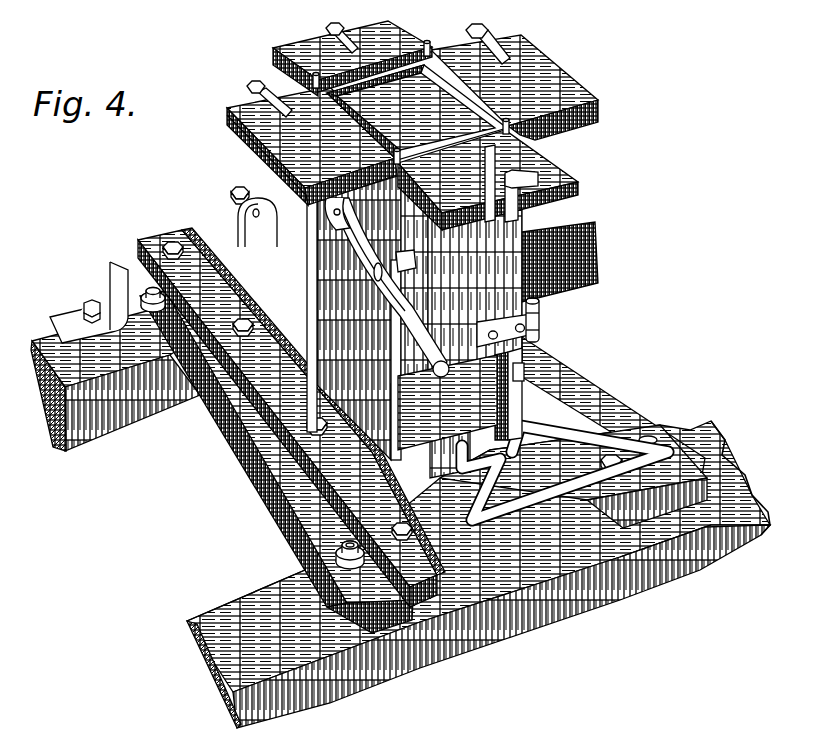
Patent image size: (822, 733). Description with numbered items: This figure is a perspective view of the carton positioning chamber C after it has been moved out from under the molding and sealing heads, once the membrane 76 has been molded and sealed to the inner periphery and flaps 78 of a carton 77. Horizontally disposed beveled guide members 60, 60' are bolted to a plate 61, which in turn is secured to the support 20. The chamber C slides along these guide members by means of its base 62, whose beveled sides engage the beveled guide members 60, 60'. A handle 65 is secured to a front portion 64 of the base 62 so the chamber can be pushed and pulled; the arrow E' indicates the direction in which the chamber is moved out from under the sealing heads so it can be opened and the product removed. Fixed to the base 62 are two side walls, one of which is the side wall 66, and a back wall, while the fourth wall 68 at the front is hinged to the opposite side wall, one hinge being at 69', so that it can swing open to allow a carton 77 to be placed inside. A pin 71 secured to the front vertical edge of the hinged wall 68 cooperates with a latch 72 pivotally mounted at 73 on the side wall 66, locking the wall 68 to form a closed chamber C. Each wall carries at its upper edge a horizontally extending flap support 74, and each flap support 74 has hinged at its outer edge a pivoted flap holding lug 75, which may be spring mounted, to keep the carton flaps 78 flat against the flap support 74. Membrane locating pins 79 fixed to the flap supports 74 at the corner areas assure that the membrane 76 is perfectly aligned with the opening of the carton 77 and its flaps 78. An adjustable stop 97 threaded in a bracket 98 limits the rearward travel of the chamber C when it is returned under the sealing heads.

The support 20 is at (87, 432).
The beveled guide member 60 is at (291, 417).
The beveled guide member 60' is at (613, 412).
The plate 61 is at (262, 476).
The base 62 is at (441, 511).
The front portion 64 is at (453, 462).
The handle 65 is at (598, 512).
The side wall 66 is at (362, 340).
The fourth wall 68 is at (480, 283).
The hinge 69' is at (563, 339).
The pin 71 is at (364, 277).
The latch 72 is at (441, 331).
The pivot 73 is at (322, 233).
The flap support 74 is at (386, 37).
The flap holding lug 75 is at (340, 46).
The membrane 76 is at (430, 123).
The carton 77 is at (456, 408).
The flaps 78 is at (386, 66).
The membrane locating pin 79 is at (428, 52).
The adjustable stop 97 is at (231, 198).
The bracket 98 is at (240, 222).
The chamber C is at (510, 274).
The arrow E' is at (214, 37).